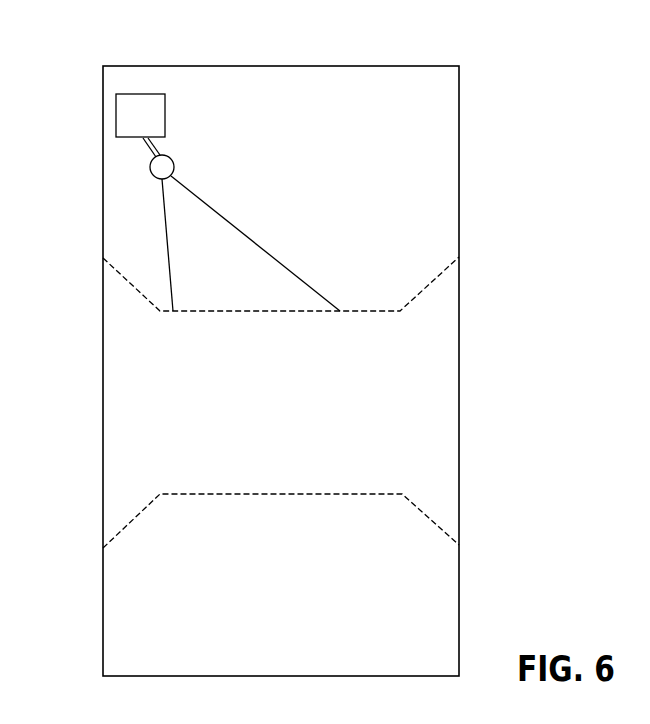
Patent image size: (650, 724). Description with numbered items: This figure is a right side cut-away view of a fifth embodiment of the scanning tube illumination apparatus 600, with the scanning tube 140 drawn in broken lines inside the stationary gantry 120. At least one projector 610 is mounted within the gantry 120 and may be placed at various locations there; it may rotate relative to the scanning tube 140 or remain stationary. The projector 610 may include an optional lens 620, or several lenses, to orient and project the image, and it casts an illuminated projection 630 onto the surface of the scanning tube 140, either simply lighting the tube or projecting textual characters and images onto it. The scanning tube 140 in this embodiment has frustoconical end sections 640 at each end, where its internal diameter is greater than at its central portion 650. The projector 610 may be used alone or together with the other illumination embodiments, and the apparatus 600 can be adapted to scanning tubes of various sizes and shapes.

The scanning tube illumination apparatus 600 is at (352, 32).
The stationary gantry 120 is at (405, 65).
The scanning tube 140 is at (380, 310).
The projector 610 is at (132, 117).
The lens 620 is at (173, 158).
The illuminated projection 630 is at (210, 243).
The frustoconical end sections 640 is at (132, 522).
The central portion 650 is at (285, 494).